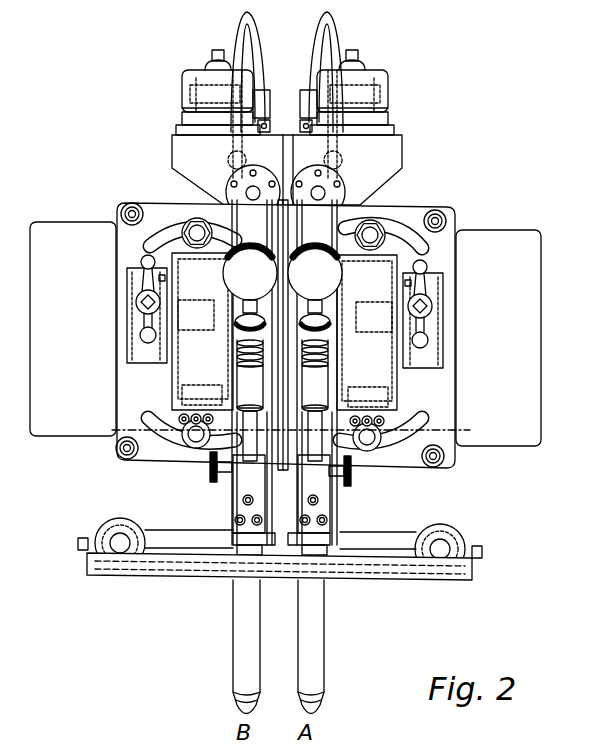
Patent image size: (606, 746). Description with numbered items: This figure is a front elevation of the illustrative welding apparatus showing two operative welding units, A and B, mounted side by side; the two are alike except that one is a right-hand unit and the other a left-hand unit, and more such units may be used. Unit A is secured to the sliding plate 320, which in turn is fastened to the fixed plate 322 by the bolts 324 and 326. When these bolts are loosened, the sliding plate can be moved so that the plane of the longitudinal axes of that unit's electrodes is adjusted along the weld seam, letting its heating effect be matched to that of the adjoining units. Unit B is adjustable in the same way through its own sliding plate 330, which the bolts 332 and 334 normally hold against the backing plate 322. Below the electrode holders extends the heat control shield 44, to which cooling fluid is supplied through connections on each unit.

The sliding plate 320 is at (430, 244).
The fixed plate 322 is at (424, 207).
The bolt 324 is at (378, 222).
The bolt 326 is at (376, 455).
The sliding plate 330 is at (153, 440).
The bolt 332 is at (198, 220).
The bolt 334 is at (188, 446).
The heat control shield 44 is at (362, 581).